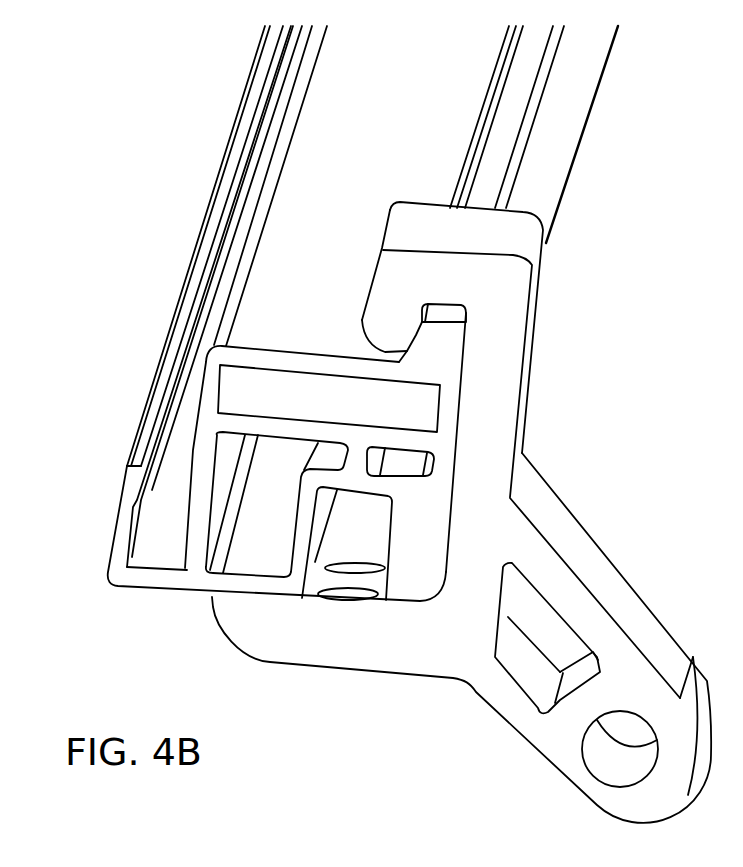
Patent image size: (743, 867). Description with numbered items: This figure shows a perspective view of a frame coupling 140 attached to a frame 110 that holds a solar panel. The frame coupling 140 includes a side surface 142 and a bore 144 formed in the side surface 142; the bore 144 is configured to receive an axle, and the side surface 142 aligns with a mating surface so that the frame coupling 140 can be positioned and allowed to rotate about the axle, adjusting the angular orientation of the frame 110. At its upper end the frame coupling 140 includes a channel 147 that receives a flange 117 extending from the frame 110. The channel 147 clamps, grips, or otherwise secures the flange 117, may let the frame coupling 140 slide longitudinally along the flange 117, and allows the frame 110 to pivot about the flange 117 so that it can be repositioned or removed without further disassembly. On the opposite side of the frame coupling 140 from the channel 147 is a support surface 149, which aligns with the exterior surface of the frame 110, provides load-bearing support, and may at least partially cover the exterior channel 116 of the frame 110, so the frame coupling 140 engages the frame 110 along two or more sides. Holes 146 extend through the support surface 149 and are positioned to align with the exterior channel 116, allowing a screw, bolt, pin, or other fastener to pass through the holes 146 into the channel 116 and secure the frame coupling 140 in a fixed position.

The frame 110 is at (307, 220).
The exterior channel 116 is at (353, 533).
The flange 117 is at (443, 354).
The frame coupling 140 is at (560, 523).
The side surface 142 is at (608, 635).
The bore 144 is at (607, 762).
The holes 146 is at (352, 572).
The channel 147 is at (447, 310).
The support surface 149 is at (323, 578).